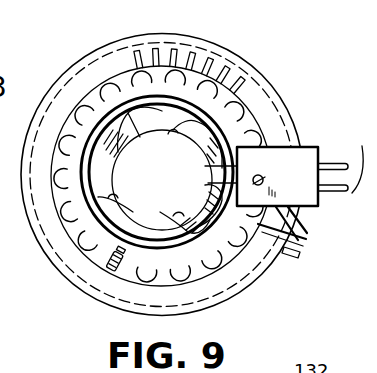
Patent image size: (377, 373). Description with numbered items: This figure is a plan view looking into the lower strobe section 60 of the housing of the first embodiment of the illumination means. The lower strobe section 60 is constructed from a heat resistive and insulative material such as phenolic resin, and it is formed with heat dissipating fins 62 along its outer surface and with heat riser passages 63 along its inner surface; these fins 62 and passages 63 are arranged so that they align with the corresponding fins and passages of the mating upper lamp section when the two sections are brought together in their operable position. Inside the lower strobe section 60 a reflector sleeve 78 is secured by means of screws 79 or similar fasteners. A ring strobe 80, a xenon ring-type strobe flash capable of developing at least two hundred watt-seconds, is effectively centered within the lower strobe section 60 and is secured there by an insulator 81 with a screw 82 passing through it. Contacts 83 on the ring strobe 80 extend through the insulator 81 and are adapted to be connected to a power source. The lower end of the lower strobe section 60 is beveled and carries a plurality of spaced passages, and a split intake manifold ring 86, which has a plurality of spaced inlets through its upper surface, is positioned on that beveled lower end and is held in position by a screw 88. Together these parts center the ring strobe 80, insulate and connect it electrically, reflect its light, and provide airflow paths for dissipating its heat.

The lower strobe section 60 is at (278, 78).
The heat dissipating fins 62 is at (208, 63).
The heat riser passages 63 is at (88, 110).
The reflector sleeve 78 is at (87, 218).
The screws 79 is at (102, 256).
The ring strobe 80 is at (140, 133).
The insulator 81 is at (303, 146).
The screw 82 is at (266, 173).
The contacts 83 is at (347, 163).
The split intake manifold ring 86 is at (243, 293).
The screw 88 is at (291, 253).